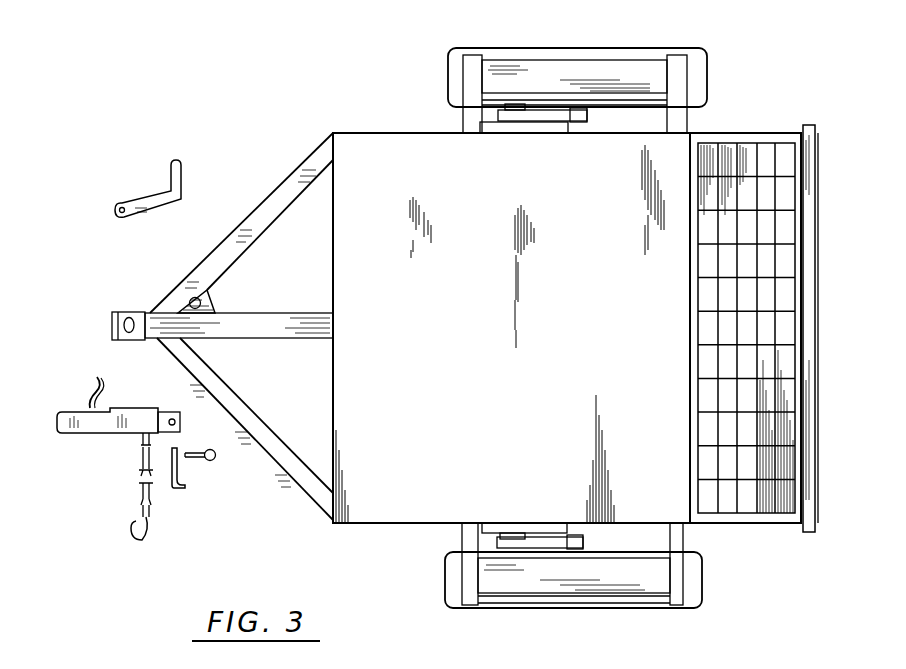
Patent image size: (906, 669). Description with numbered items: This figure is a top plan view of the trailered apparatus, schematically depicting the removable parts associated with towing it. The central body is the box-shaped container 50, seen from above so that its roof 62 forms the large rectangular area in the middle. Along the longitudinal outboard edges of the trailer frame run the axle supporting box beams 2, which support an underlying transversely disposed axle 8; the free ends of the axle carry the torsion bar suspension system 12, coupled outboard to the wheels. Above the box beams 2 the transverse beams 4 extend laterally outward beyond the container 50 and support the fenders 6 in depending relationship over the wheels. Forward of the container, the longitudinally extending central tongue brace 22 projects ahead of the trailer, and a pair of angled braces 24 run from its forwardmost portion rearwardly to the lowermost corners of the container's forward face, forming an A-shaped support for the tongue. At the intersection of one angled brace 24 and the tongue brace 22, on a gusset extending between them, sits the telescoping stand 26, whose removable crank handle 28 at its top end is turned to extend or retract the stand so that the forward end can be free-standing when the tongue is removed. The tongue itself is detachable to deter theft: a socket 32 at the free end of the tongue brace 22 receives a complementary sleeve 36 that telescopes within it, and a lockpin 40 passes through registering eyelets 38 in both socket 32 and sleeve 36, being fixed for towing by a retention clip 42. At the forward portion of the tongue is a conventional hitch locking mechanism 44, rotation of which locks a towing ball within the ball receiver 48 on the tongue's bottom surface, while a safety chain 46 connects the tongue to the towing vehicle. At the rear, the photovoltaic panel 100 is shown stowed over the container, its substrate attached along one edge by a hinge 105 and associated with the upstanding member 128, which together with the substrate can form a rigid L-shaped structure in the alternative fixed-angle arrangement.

The container 50 is at (357, 117).
The roof 62 is at (468, 342).
The central tongue brace 22 is at (285, 322).
The socket 32 is at (112, 320).
The angled braces 24 is at (268, 211).
The telescoping stand 26 is at (212, 301).
The crank handle 28 is at (158, 200).
The ball receiver 48 is at (63, 432).
The sleeve 36 is at (170, 412).
The eyelets 38 is at (180, 423).
The hitch locking mechanism 44 is at (92, 396).
The safety chain 46 is at (141, 505).
The lockpin 40 is at (178, 488).
The retention clip 42 is at (216, 460).
The transverse beams 4 is at (470, 55).
The fenders 6 is at (600, 48).
The torsion bar suspension system 12 is at (537, 118).
The axle supporting box beams 2 is at (522, 133).
The axle 8 is at (512, 533).
The photovoltaic panel 100 is at (722, 122).
The hinge 105 is at (808, 126).
The upstanding member 128 is at (815, 256).